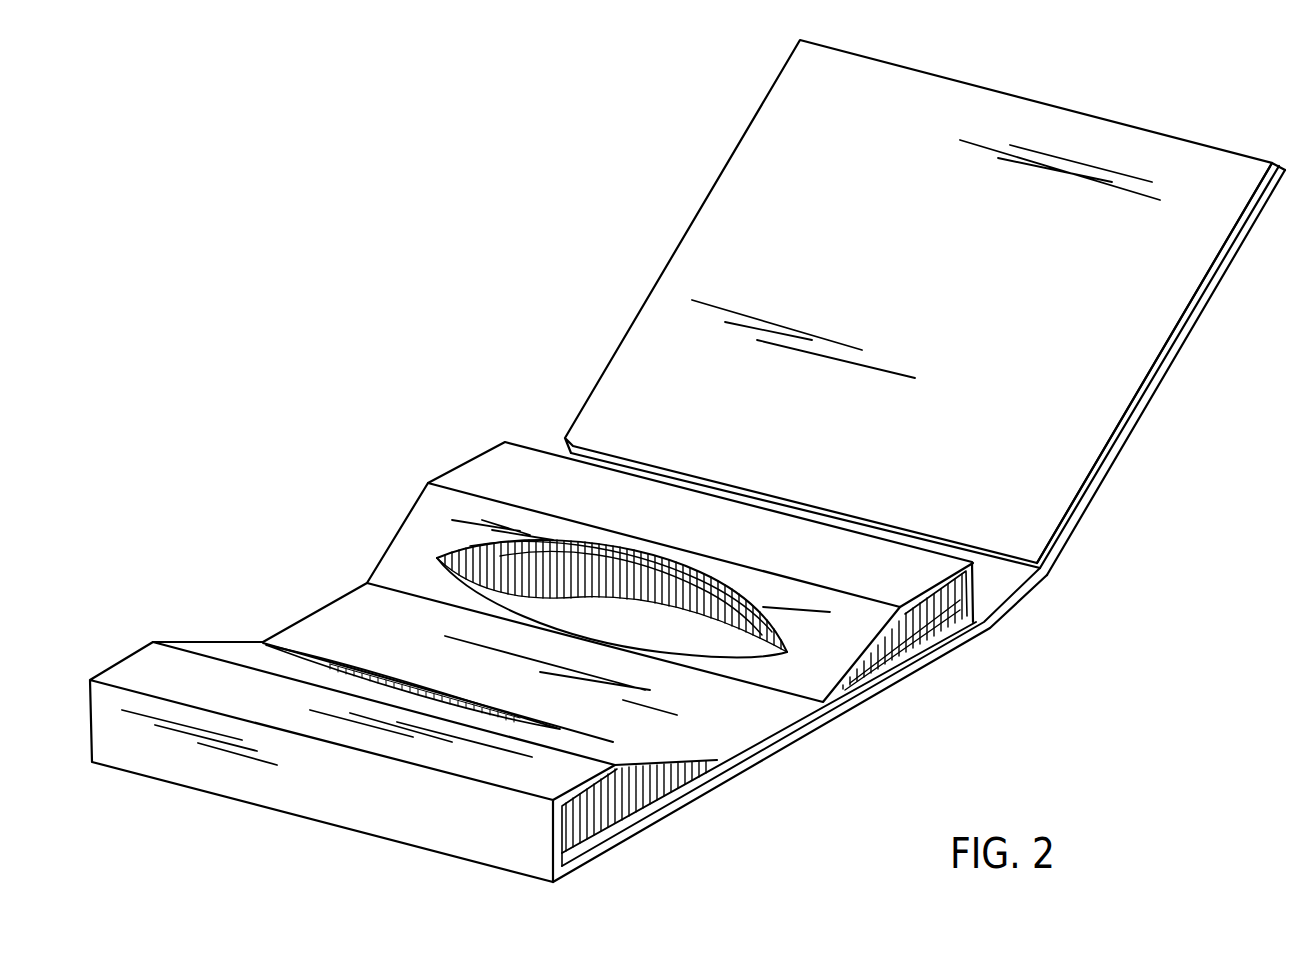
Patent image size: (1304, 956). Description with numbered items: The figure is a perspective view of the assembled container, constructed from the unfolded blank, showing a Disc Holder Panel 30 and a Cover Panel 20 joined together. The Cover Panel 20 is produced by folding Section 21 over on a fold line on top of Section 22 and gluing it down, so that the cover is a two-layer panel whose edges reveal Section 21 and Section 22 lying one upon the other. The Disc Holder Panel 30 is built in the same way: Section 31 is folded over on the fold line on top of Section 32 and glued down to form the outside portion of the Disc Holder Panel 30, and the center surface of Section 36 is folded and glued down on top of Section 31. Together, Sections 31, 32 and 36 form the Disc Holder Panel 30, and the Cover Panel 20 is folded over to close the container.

The lid 20 is at (713, 181).
The inner lid layer 21 is at (1175, 328).
The outer lid layer 22 is at (1205, 295).
The base tray 30 is at (568, 662).
The inner base layer 31 is at (826, 717).
The outer base layer 32 is at (880, 693).
The tray floor 36 is at (750, 723).